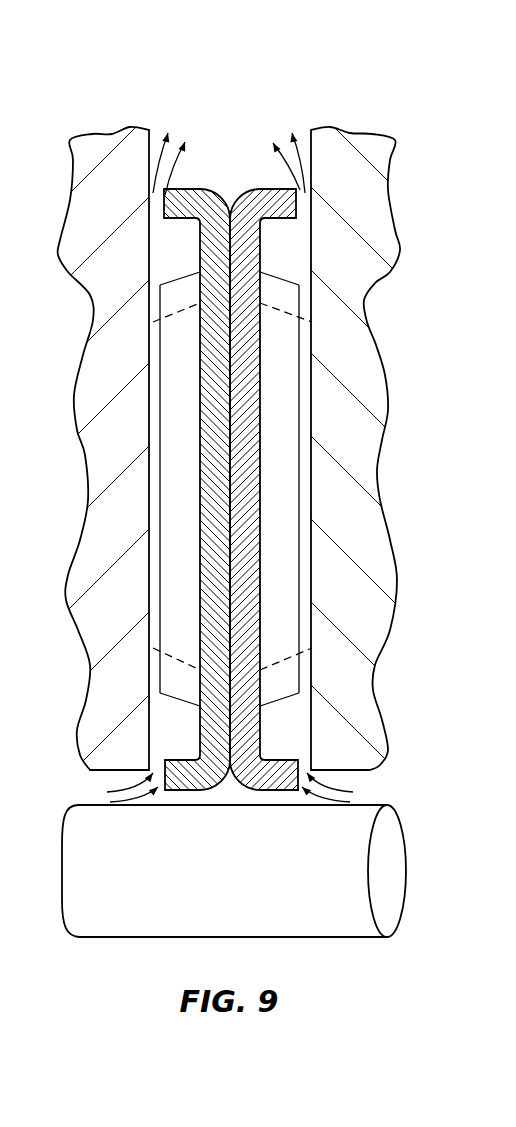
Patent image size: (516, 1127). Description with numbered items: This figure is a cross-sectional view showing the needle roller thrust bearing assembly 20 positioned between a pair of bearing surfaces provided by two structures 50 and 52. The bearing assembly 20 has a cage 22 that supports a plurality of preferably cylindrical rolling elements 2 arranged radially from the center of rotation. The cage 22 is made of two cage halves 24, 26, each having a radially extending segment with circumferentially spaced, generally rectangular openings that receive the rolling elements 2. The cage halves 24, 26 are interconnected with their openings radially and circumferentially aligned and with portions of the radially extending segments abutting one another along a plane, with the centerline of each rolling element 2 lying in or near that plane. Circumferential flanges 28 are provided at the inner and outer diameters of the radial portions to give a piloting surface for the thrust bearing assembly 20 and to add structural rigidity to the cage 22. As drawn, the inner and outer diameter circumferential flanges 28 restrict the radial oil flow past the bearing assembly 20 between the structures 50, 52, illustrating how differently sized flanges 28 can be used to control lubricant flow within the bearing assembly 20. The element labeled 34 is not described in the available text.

The thrust bearing assembly 20 is at (232, 82).
The cage 22 is at (231, 203).
The cage half 24 is at (253, 528).
The cage half 26 is at (217, 692).
The circumferential flanges 28 is at (193, 195).
The rolling elements 2 is at (307, 370).
The sleeve end flange 34 is at (285, 302).
The structure 50 is at (108, 152).
The structure 52 is at (348, 157).